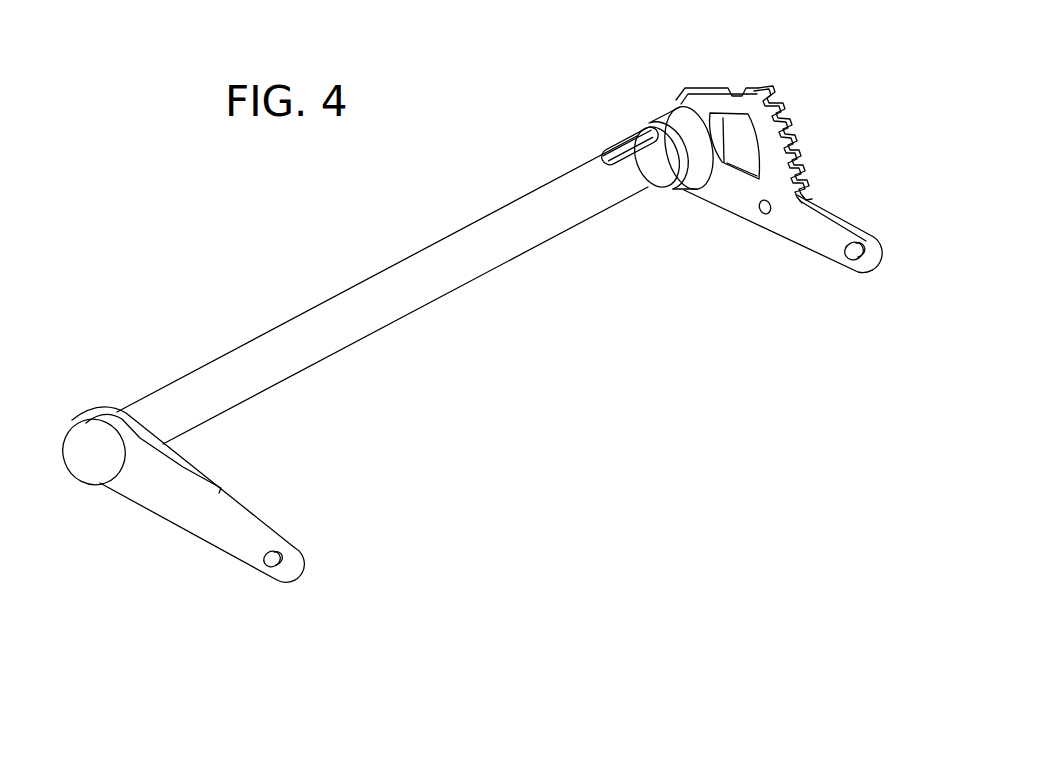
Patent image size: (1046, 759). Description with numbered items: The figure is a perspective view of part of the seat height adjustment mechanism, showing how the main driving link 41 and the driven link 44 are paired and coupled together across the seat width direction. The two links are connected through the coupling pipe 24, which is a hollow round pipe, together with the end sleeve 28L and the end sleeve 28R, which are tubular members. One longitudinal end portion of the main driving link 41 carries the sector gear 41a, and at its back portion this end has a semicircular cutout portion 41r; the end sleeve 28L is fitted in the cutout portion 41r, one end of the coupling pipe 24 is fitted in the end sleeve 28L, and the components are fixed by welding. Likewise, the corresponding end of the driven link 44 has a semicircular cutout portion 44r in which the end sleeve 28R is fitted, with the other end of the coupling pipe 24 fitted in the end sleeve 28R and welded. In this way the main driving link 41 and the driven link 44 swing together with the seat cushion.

The coupling pipe 24 is at (405, 278).
The end sleeve 28L is at (670, 120).
The end sleeve 28R is at (88, 468).
The main driving link 41 is at (811, 264).
The sector gear 41a is at (720, 103).
The cutout portion 41r is at (713, 142).
The driven link 44 is at (223, 573).
The cutout portion 44r is at (125, 462).